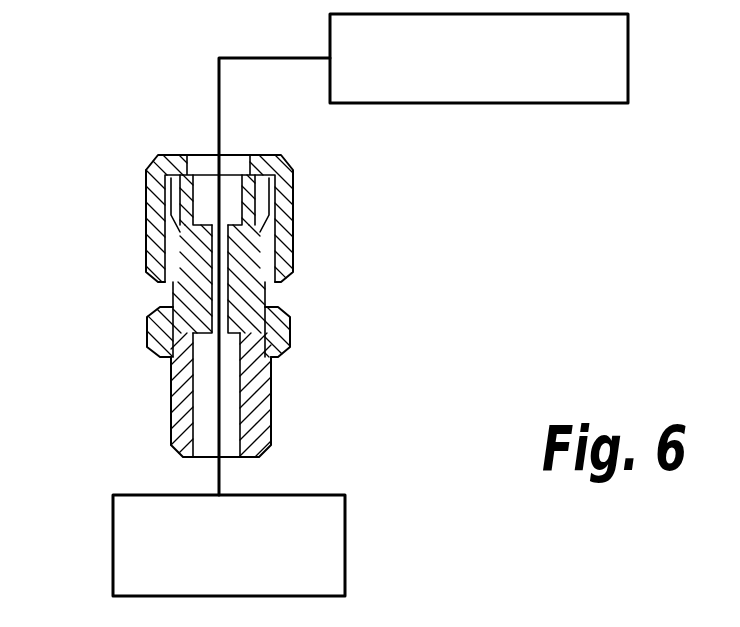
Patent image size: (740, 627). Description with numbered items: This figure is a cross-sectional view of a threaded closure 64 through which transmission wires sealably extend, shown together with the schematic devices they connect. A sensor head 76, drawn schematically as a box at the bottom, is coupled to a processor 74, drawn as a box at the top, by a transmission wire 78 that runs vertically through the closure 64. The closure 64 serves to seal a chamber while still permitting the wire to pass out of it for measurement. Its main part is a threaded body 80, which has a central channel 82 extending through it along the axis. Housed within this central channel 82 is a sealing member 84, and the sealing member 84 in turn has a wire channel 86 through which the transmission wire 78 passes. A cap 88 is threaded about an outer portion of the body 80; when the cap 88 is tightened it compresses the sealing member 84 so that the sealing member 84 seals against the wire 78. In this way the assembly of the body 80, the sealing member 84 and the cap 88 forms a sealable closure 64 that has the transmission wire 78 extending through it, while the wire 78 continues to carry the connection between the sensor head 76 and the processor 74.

The threaded closure 64 is at (303, 318).
The processor 74 is at (557, 117).
The sensor head 76 is at (356, 510).
The transmission wire 78 is at (210, 382).
The threaded body 80 is at (171, 445).
The central channel 82 is at (235, 410).
The sealing member 84 is at (173, 293).
The wire channel 86 is at (252, 250).
The cap 88 is at (157, 202).